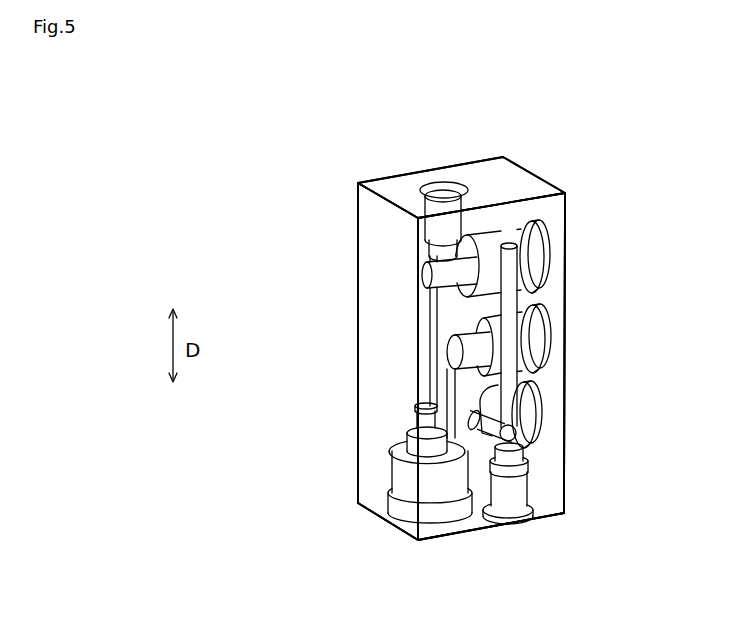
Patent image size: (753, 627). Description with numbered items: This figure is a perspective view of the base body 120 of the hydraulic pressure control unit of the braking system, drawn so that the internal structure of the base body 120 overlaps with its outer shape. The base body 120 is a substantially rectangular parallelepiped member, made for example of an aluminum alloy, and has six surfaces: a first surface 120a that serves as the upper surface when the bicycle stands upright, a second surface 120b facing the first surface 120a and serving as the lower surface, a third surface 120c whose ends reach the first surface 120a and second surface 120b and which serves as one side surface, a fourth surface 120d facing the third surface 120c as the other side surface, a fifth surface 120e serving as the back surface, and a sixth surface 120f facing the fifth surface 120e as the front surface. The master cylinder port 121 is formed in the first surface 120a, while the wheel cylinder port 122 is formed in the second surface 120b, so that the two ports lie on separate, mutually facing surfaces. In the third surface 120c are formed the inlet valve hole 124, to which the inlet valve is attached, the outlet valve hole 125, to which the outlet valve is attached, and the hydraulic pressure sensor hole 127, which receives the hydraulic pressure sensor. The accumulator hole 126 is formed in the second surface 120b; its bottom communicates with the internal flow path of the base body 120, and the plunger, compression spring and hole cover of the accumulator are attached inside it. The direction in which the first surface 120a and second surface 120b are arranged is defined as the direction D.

The base body 120 is at (397, 188).
The first surface 120a is at (513, 183).
The second surface 120b is at (547, 518).
The third surface 120c is at (567, 477).
The fourth surface 120d is at (367, 487).
The fifth surface 120e is at (548, 220).
The sixth surface 120f is at (357, 435).
The master cylinder port 121 is at (455, 182).
The wheel cylinder port 122 is at (522, 518).
The inlet valve hole 124 is at (548, 273).
The outlet valve hole 125 is at (548, 355).
The accumulator hole 126 is at (413, 525).
The hydraulic pressure sensor hole 127 is at (540, 428).